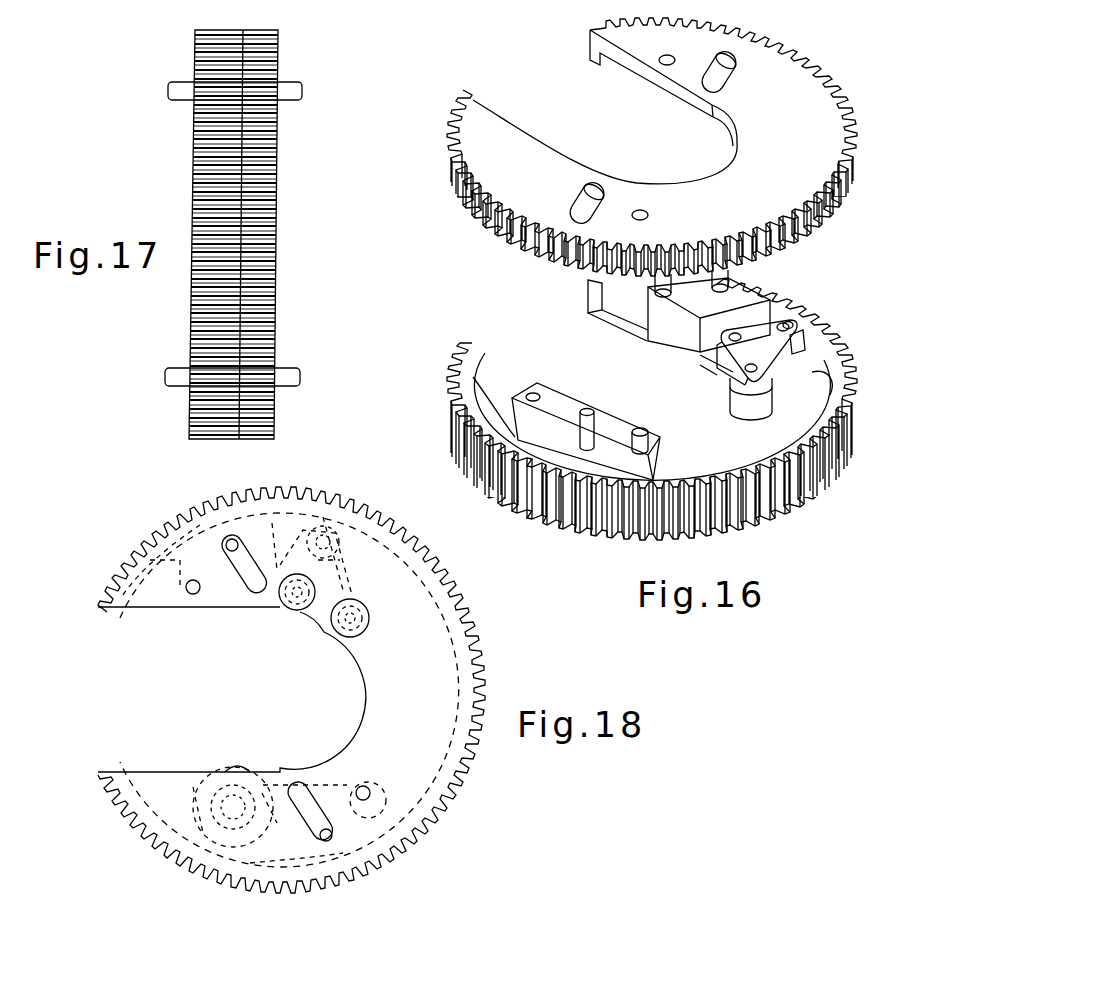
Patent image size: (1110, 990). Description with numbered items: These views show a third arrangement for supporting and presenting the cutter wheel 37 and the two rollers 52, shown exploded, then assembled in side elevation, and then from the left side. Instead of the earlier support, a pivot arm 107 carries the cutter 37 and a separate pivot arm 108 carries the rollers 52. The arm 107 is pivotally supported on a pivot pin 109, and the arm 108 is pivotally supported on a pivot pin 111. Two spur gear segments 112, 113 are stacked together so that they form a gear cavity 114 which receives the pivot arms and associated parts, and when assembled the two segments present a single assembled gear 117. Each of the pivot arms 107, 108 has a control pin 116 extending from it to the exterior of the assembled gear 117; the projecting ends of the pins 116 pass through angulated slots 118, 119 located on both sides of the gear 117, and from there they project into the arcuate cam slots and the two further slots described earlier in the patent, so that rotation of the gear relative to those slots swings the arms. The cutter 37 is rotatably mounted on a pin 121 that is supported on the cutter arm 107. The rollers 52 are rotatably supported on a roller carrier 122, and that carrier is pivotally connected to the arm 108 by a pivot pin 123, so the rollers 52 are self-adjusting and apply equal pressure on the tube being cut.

In FIG. 18, the cutter wheel 37 is at (240, 770).
In FIG. 16, the rollers 52 is at (783, 347).
In FIG. 18, the rollers 52 is at (295, 612).
In FIG. 16, the pivot arm 107 is at (550, 410).
In FIG. 18, the pivot arm 107 is at (348, 785).
In FIG. 16, the pivot arm 108 is at (670, 328).
In FIG. 18, the pivot arm 108 is at (133, 544).
In FIG. 18, the pivot pin 109 is at (373, 796).
In FIG. 18, the pivot pin 111 is at (188, 594).
In FIG. 17, the spur gear segment 112 is at (262, 340).
In FIG. 17, the spur gear segment 113 is at (263, 305).
In FIG. 16, the gear cavity 114 is at (822, 372).
In FIG. 17, the control pin 116 is at (182, 92).
In FIG. 16, the control pin 116 is at (590, 422).
In FIG. 18, the control pin 116 is at (235, 556).
In FIG. 17, the assembled gear 117 is at (333, 213).
In FIG. 16, the angulated slot 118 is at (577, 203).
In FIG. 18, the angulated slot 118 is at (335, 792).
In FIG. 16, the angulated slot 119 is at (730, 75).
In FIG. 18, the angulated slot 119 is at (240, 570).
In FIG. 18, the pin 121 is at (192, 800).
In FIG. 16, the roller carrier 122 is at (783, 340).
In FIG. 16, the pivot pin 123 is at (790, 320).